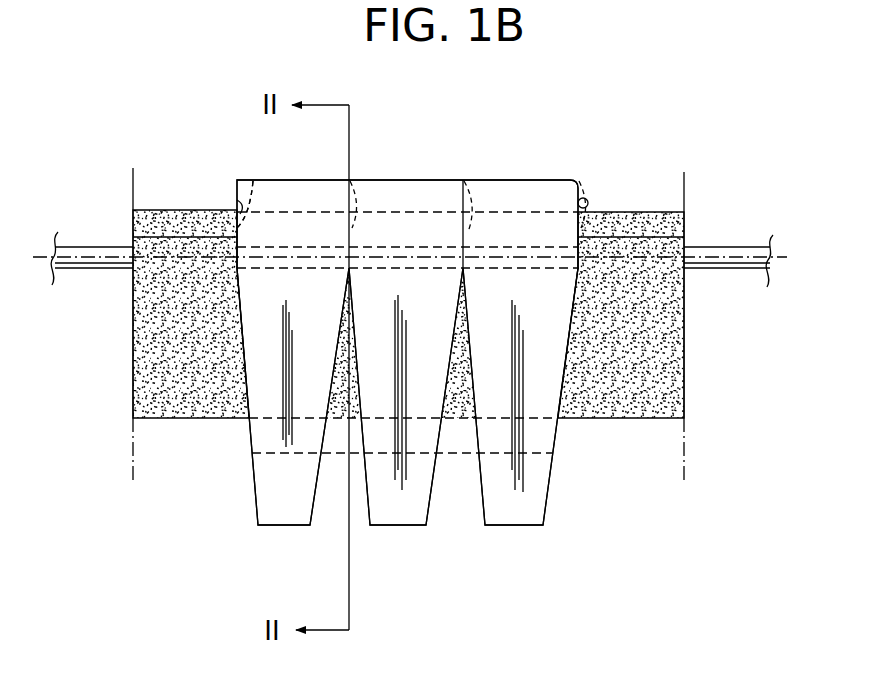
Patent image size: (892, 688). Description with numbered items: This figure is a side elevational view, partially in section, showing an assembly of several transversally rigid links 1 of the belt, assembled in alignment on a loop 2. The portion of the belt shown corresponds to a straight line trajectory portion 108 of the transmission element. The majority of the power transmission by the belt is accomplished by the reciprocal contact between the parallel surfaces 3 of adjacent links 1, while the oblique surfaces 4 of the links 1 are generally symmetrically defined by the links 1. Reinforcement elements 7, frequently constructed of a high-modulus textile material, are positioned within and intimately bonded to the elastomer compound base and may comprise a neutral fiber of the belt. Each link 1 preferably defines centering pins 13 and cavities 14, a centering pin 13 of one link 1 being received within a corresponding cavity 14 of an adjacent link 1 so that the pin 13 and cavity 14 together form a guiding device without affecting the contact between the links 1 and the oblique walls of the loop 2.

The transversally rigid link 1 is at (332, 182).
The loop 2 is at (640, 322).
The parallel surfaces 3 is at (233, 184).
The oblique surfaces 4 is at (250, 483).
The reinforcement elements 7 is at (740, 253).
The centering pin 13 is at (237, 204).
The cavity 14 is at (251, 186).
The straight line trajectory portion 108 is at (218, 484).